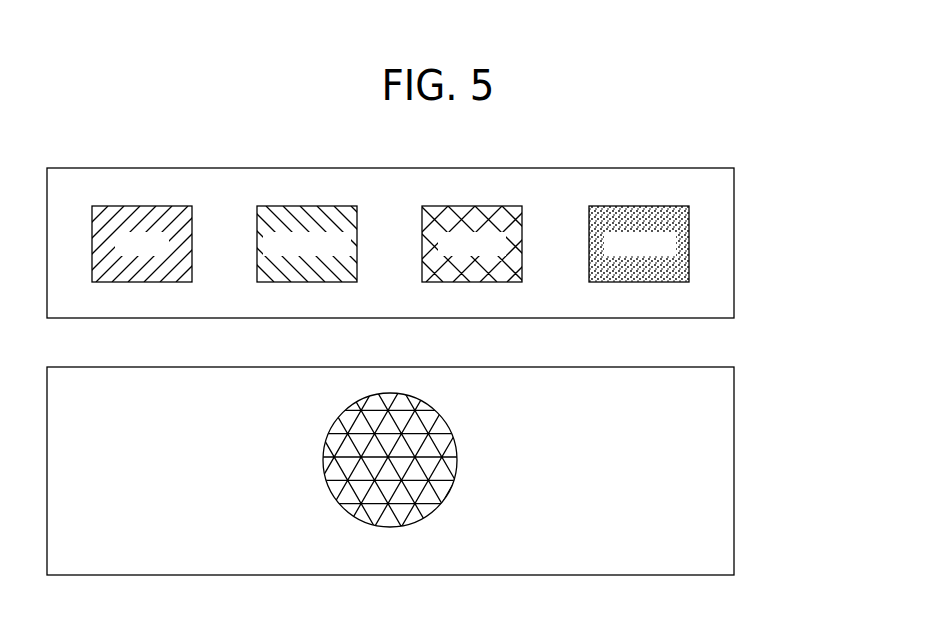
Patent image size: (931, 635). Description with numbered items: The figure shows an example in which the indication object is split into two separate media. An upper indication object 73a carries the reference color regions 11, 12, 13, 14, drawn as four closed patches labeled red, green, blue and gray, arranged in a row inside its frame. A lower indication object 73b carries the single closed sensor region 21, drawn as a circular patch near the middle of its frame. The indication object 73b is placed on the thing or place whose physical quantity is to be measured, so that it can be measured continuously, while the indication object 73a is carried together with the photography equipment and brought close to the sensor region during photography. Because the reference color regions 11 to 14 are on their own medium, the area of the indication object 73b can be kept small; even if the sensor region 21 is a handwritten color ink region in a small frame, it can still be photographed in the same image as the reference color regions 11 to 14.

The indication object for the reference color regions 73a is at (742, 207).
The indication object for the sensor region 73b is at (743, 421).
The reference color region 11 is at (138, 282).
The reference color region 12 is at (297, 282).
The reference color region 13 is at (474, 282).
The reference color region 14 is at (637, 282).
The sensor region 21 is at (331, 494).